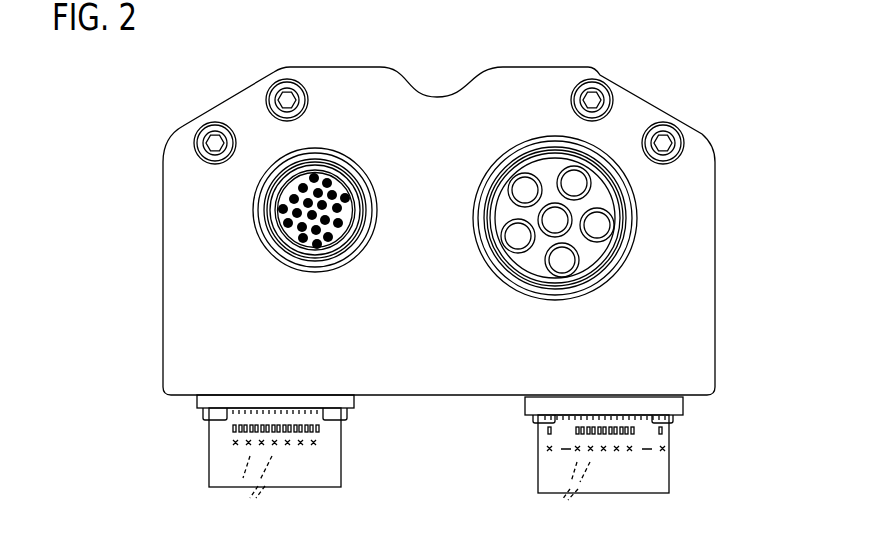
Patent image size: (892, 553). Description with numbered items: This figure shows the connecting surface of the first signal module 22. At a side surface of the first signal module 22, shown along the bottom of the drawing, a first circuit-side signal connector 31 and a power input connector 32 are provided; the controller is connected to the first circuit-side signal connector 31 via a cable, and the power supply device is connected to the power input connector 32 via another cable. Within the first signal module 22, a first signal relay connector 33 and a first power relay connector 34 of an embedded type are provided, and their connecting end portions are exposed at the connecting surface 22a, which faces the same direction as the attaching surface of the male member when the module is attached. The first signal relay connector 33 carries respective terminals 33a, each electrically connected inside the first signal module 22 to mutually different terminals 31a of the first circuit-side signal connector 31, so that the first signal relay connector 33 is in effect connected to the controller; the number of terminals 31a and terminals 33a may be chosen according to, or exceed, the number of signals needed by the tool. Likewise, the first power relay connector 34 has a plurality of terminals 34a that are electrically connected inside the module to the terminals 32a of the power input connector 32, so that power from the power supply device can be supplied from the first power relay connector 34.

The first signal module 22 is at (714, 207).
The connecting surface 22a is at (698, 278).
The first circuit-side signal connector 31 is at (341, 468).
The terminals of first circuit-side signal connector 31a is at (254, 490).
The power input connector 32 is at (669, 476).
The terminals of power input connector 32a is at (565, 494).
The first signal relay connector 33 is at (343, 263).
The terminals of first signal relay connector 33a is at (284, 254).
The first power relay connector 34 is at (600, 287).
The terminals of first power relay connector 34a is at (540, 268).